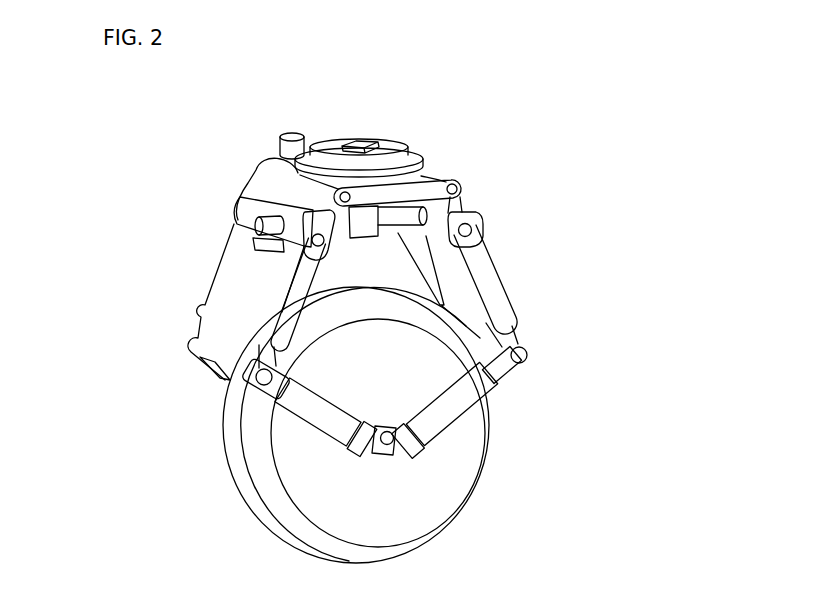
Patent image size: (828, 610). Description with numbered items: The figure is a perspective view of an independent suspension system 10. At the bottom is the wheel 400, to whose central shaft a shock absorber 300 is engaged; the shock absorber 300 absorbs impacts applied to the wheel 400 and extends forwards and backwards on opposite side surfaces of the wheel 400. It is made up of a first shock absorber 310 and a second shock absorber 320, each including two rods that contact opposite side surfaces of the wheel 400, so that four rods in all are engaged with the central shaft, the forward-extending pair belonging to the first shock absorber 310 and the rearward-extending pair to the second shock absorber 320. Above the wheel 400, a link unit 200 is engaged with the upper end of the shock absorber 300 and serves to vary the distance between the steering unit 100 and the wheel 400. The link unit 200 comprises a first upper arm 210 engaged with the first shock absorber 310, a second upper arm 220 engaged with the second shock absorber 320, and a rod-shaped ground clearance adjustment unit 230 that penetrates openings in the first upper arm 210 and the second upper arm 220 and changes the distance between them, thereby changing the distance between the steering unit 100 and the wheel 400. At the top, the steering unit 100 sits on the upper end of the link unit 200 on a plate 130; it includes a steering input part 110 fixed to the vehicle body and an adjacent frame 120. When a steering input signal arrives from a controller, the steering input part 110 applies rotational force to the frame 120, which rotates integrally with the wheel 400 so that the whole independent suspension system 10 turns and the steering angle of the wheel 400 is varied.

The independent suspension system 10 is at (352, 115).
The steering unit 100 is at (435, 150).
The steering input part 110 is at (284, 147).
The frame 120 is at (413, 153).
The plate 130 is at (433, 188).
The link unit 200 is at (495, 228).
The first upper arm 210 is at (490, 288).
The second upper arm 220 is at (222, 290).
The ground clearance adjustment unit 230 is at (400, 214).
The shock absorber 300 is at (525, 375).
The first shock absorber 310 is at (477, 400).
The second shock absorber 320 is at (230, 373).
The wheel 400 is at (443, 493).